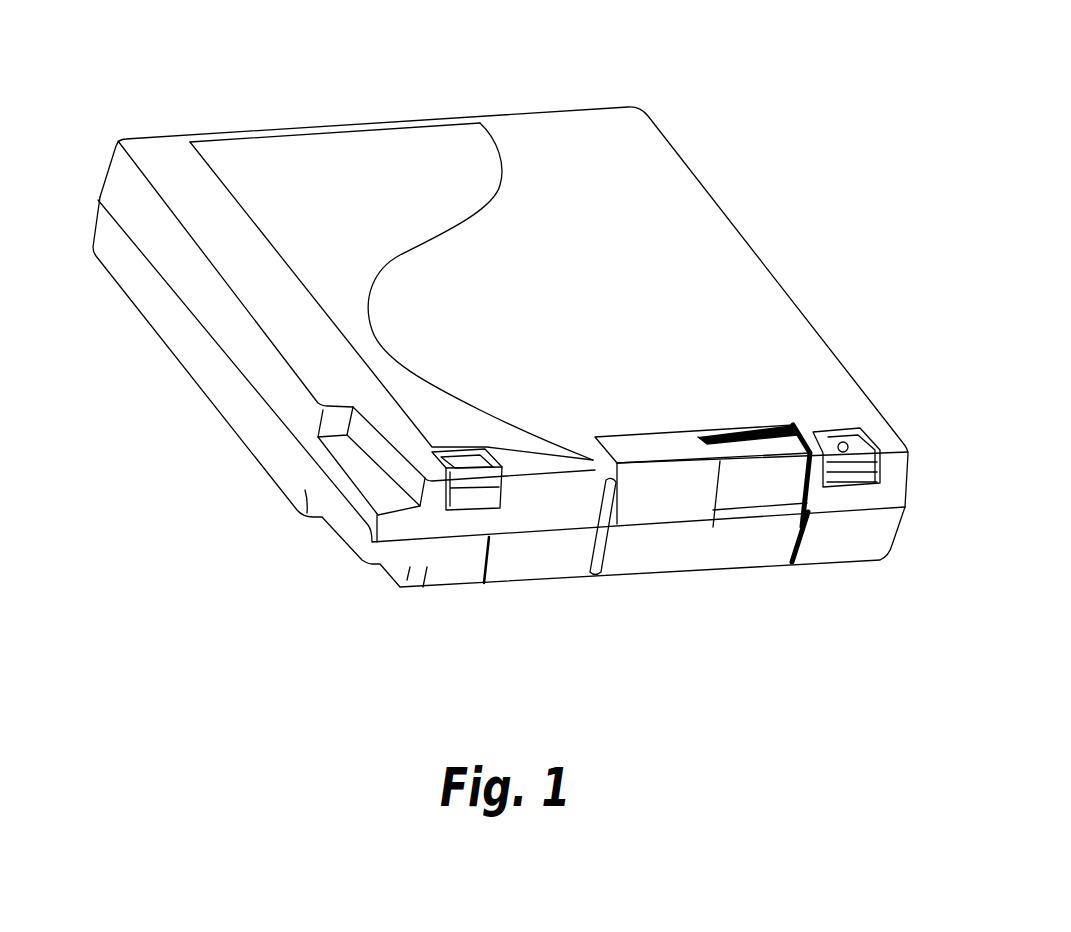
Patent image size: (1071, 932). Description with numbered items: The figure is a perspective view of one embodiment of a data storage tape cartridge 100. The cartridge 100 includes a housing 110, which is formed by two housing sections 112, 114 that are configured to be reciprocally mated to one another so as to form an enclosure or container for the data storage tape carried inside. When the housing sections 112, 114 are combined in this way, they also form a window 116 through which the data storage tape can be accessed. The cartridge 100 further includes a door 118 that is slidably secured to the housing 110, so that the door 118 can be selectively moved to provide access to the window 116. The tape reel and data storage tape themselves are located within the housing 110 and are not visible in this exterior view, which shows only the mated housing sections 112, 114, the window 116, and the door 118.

The data storage tape cartridge 100 is at (690, 44).
The housing 110 is at (568, 102).
The housing section 112 is at (113, 182).
The housing section 114 is at (125, 272).
The window 116 is at (693, 432).
The door 118 is at (627, 560).